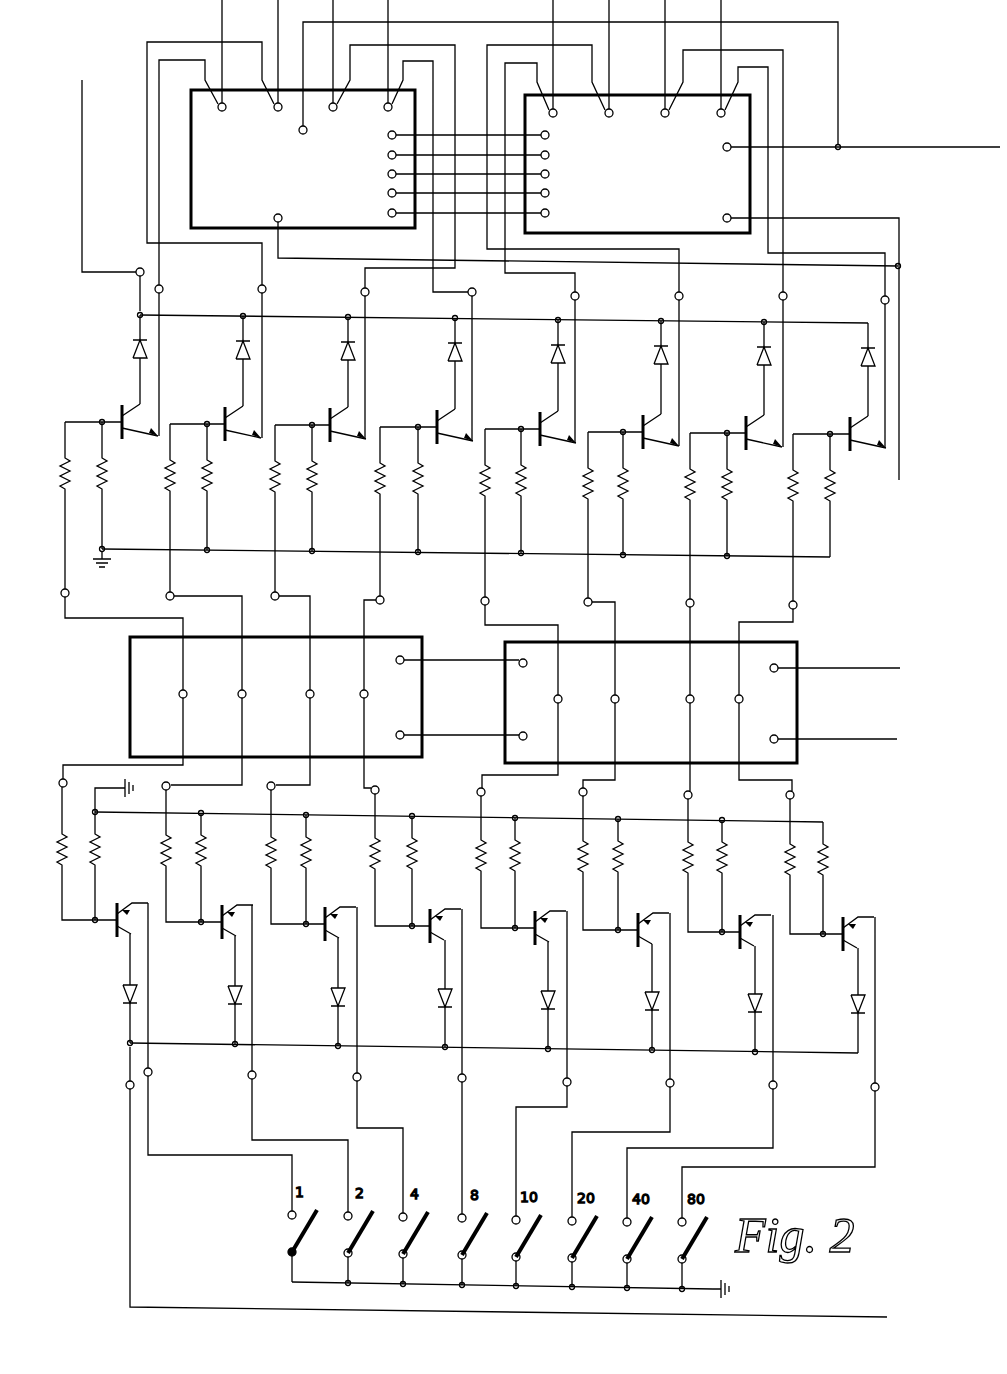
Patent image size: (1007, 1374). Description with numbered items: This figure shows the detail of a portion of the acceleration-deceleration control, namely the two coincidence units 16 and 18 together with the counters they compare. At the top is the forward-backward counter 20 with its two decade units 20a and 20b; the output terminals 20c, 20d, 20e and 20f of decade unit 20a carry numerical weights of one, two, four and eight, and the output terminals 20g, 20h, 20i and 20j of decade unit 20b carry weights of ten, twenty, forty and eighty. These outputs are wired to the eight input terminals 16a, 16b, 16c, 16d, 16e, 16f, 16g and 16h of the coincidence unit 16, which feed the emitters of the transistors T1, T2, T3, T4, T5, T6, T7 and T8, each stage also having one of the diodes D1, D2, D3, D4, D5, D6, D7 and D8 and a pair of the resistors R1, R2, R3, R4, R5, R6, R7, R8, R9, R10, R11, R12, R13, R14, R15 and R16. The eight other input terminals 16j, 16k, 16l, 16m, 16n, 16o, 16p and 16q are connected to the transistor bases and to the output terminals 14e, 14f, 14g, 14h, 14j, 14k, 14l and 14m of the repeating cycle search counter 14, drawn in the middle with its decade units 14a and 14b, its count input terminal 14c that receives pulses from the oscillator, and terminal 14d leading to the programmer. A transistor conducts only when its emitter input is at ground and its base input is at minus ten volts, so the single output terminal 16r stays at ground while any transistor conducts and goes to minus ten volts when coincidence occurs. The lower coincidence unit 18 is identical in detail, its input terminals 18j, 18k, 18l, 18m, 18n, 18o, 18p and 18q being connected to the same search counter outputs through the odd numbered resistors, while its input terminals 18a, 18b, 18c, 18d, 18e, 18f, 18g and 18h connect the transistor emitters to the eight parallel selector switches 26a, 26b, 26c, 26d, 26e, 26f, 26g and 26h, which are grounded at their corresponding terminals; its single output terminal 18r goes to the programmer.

The repeating cycle search counter 14 is at (474, 709).
The decade unit 14a is at (153, 654).
The decade unit 14b is at (653, 658).
The count input terminal 14c is at (771, 736).
The programmer output contact 14d is at (770, 670).
The output terminal 14e is at (179, 693).
The output terminal 14f is at (238, 693).
The output terminal 14g is at (306, 693).
The output terminal 14h is at (360, 693).
The output terminal 14j is at (554, 698).
The output terminal 14k is at (611, 698).
The output terminal 14l is at (686, 698).
The output terminal 14m is at (735, 698).
The coincidence unit 16 is at (58, 552).
The input terminal 16a is at (163, 286).
The input terminal 16b is at (266, 286).
The input terminal 16c is at (369, 289).
The input terminal 16d is at (476, 289).
The input terminal 16e is at (579, 293).
The input terminal 16f is at (683, 293).
The input terminal 16g is at (787, 293).
The input terminal 16h is at (881, 297).
The input terminal 16j is at (69, 594).
The input terminal 16k is at (173, 593).
The input terminal 16l is at (278, 593).
The input terminal 16m is at (383, 597).
The input terminal 16n is at (488, 598).
The input terminal 16o is at (591, 599).
The input terminal 16p is at (693, 600).
The input terminal 16q is at (796, 602).
The output terminal 16r is at (137, 269).
The coincidence unit 18 is at (102, 1040).
The input terminal 18a is at (152, 1071).
The input terminal 18b is at (256, 1074).
The input terminal 18c is at (361, 1076).
The input terminal 18d is at (466, 1077).
The input terminal 18e is at (571, 1081).
The input terminal 18f is at (674, 1082).
The input terminal 18g is at (776, 1089).
The input terminal 18h is at (871, 1086).
The input terminal 18j is at (59, 782).
The input terminal 18k is at (163, 789).
The input terminal 18l is at (268, 789).
The input terminal 18m is at (372, 793).
The input terminal 18n is at (478, 795).
The input terminal 18o is at (580, 795).
The input terminal 18p is at (685, 798).
The input terminal 18q is at (787, 798).
The output terminal 18r is at (126, 1085).
The forward-backward counter 20 is at (190, 142).
The decade unit 20a is at (243, 192).
The decade unit 20b is at (687, 196).
The output terminal 20c is at (219, 111).
The output terminal 20d is at (275, 111).
The output terminal 20e is at (330, 111).
The output terminal 20f is at (385, 111).
The output terminal 20g is at (556, 117).
The output terminal 20h is at (612, 117).
The output terminal 20i is at (662, 117).
The output terminal 20j is at (718, 117).
The selector switch 26a is at (288, 1238).
The selector switch 26b is at (344, 1240).
The selector switch 26c is at (399, 1243).
The selector switch 26d is at (458, 1244).
The selector switch 26e is at (512, 1246).
The selector switch 26f is at (568, 1247).
The selector switch 26g is at (623, 1248).
The selector switch 26h is at (678, 1249).
The resistor R1 is at (60, 462).
The resistor R2 is at (107, 480).
The resistor R3 is at (164, 465).
The resistor R4 is at (212, 482).
The resistor R5 is at (268, 467).
The resistor R6 is at (317, 483).
The resistor R7 is at (373, 469).
The resistor R8 is at (423, 486).
The resistor R9 is at (478, 470).
The resistor R10 is at (536, 489).
The resistor R11 is at (584, 472).
The resistor R12 is at (628, 491).
The resistor R13 is at (688, 474).
The resistor R14 is at (732, 492).
The resistor R15 is at (790, 475).
The resistor R16 is at (835, 494).
The diode D1 is at (133, 352).
The diode D2 is at (235, 353).
The diode D3 is at (337, 354).
The diode D4 is at (439, 355).
The diode D5 is at (543, 357).
The diode D6 is at (649, 358).
The diode D7 is at (748, 359).
The diode D8 is at (852, 360).
The transistor T1 is at (116, 416).
The transistor T2 is at (219, 418).
The transistor T3 is at (326, 419).
The transistor T4 is at (433, 421).
The transistor T5 is at (536, 423).
The transistor T6 is at (641, 425).
The transistor T7 is at (746, 426).
The transistor T8 is at (848, 427).